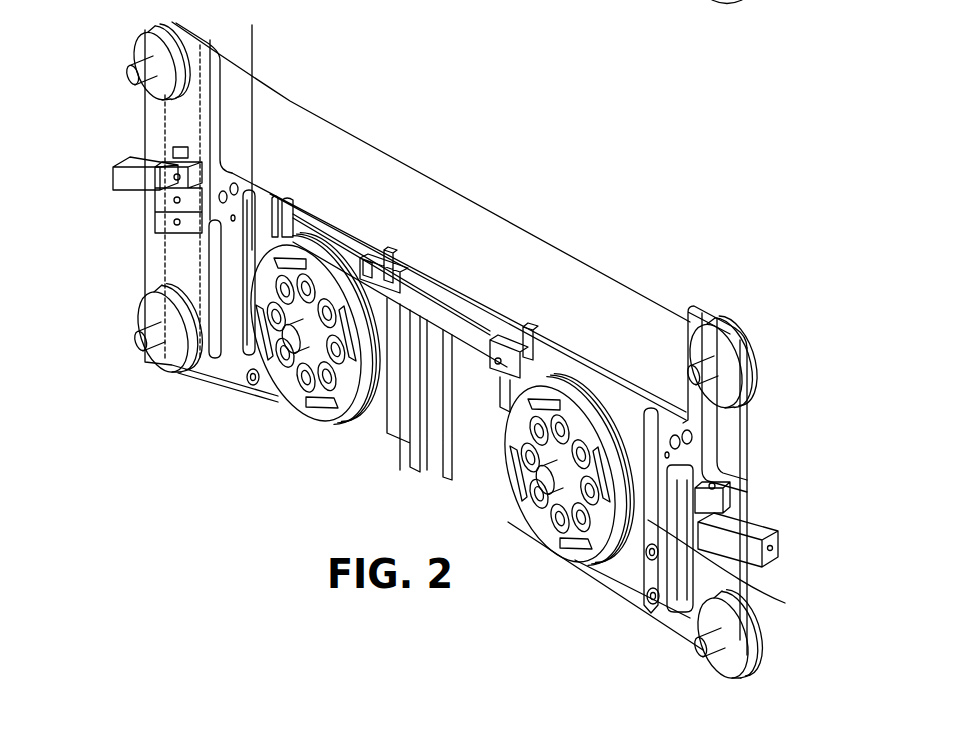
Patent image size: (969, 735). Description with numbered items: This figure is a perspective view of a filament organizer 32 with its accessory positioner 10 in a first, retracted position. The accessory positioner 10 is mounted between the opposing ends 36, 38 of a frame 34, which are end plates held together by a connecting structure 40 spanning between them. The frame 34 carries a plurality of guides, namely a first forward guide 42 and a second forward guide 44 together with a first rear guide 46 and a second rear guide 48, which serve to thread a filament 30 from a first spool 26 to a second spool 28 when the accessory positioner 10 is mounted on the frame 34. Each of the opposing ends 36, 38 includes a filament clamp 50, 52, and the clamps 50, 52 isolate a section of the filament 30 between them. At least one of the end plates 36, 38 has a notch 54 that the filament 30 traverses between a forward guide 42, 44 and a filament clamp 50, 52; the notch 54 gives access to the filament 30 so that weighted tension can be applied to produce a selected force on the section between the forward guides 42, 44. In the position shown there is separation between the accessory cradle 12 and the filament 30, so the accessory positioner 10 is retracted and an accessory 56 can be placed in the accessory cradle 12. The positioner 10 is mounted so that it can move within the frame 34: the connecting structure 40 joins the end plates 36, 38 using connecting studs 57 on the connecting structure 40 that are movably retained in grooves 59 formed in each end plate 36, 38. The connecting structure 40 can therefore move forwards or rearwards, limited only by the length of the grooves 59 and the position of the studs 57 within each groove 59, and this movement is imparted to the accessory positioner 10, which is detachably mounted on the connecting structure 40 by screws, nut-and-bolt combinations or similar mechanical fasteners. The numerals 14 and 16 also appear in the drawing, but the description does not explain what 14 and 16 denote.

The accessory positioner 10 is at (350, 462).
The accessory cradle 12 is at (447, 323).
The carriage 14 is at (570, 363).
The rail 16 is at (290, 233).
The first spool 26 is at (578, 553).
The second spool 28 is at (323, 413).
The filament 30 is at (472, 201).
The filament organizer 32 is at (744, 298).
The frame 34 is at (757, 463).
The opposing end 36 is at (693, 423).
The opposing end 38 is at (186, 122).
The connecting structure 40 is at (540, 377).
The first forward guide 42 is at (722, 362).
The second forward guide 44 is at (153, 43).
The first rear guide 46 is at (730, 663).
The second rear guide 48 is at (157, 317).
The filament clamp 50 is at (757, 532).
The filament clamp 52 is at (137, 190).
The notch 54 is at (735, 448).
The accessory 56 is at (402, 285).
The connecting studs 57 is at (246, 372).
The grooves 59 is at (798, 604).